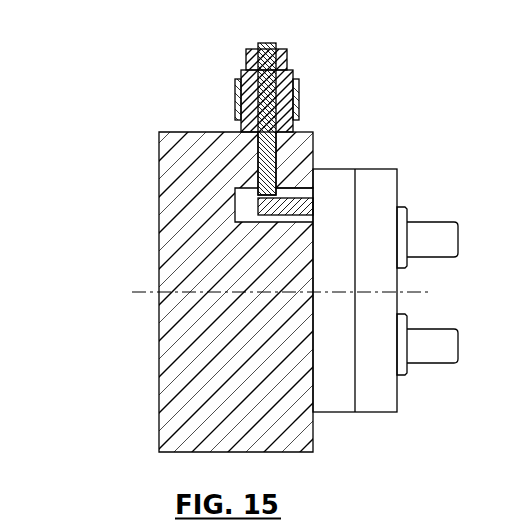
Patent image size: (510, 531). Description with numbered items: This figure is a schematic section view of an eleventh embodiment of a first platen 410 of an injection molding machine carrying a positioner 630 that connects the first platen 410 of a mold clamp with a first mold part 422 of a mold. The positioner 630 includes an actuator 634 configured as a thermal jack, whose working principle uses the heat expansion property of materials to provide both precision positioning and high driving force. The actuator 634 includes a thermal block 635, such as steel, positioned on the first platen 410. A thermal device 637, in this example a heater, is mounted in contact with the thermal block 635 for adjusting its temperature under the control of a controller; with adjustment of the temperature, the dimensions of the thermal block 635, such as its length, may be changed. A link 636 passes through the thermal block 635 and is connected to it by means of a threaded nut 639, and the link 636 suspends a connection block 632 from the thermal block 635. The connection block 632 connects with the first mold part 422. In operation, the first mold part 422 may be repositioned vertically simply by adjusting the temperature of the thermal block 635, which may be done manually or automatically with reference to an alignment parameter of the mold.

The first platen 410 is at (152, 415).
The first mold part 422 is at (370, 180).
The positioner 630 is at (319, 80).
The connection block 632 is at (258, 205).
The actuator 634 is at (97, 17).
The thermal block 635 is at (240, 112).
The link 636 is at (258, 168).
The thermal device 637 is at (241, 85).
The threaded nut 639 is at (248, 53).